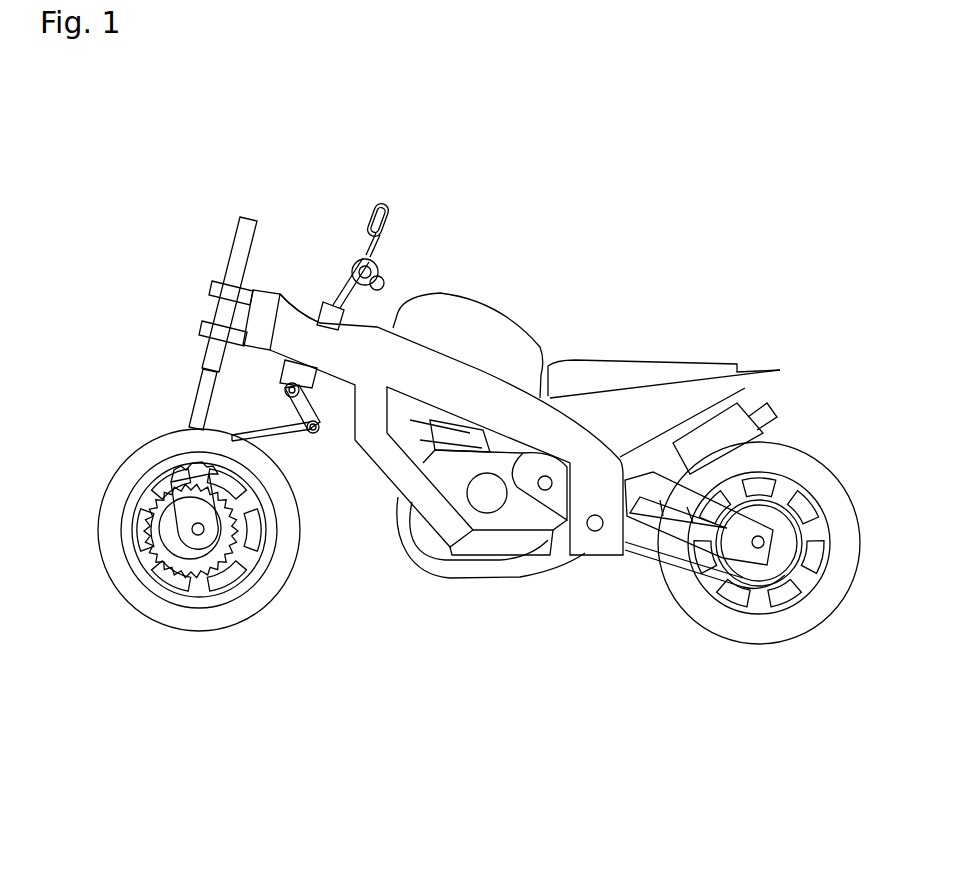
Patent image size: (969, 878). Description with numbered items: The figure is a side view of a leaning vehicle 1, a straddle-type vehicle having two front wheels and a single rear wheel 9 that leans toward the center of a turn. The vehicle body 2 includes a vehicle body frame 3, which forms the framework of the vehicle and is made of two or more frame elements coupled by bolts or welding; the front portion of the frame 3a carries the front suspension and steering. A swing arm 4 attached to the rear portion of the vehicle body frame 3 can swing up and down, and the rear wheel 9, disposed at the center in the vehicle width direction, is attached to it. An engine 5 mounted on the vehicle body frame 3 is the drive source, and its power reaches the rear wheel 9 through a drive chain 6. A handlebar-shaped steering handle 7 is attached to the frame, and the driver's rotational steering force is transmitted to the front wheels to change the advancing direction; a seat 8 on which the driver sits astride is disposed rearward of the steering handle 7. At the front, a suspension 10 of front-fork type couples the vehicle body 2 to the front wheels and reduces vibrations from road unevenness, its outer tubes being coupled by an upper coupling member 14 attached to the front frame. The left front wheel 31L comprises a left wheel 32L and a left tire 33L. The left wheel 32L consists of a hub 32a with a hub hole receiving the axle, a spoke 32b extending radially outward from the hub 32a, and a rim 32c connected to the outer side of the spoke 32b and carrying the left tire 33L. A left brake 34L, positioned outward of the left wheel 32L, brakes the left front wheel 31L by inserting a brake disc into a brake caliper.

The leaning vehicle 1 is at (766, 148).
The vehicle body 2 is at (505, 652).
The vehicle body frame 3 is at (437, 370).
The head pipe portion of frame 3a is at (293, 317).
The swing arm 4 is at (640, 535).
The engine 5 is at (522, 522).
The drive chain 6 is at (680, 563).
The steering handle 7 is at (421, 239).
The seat 8 is at (600, 368).
The rear wheel 9 is at (762, 680).
The suspension 10 is at (166, 283).
The upper coupling member 14 is at (213, 283).
The left front wheel 31L is at (392, 750).
The left wheel 32L is at (310, 691).
The hub 32a is at (188, 547).
The spoke 32b is at (210, 590).
The rim 32c is at (253, 580).
The left tire 33L is at (290, 547).
The left brake 34L is at (177, 468).